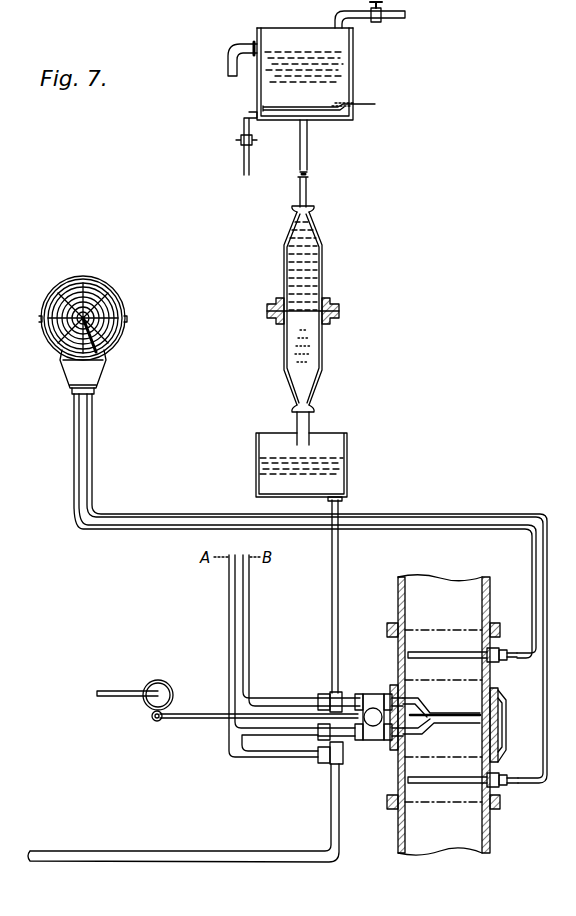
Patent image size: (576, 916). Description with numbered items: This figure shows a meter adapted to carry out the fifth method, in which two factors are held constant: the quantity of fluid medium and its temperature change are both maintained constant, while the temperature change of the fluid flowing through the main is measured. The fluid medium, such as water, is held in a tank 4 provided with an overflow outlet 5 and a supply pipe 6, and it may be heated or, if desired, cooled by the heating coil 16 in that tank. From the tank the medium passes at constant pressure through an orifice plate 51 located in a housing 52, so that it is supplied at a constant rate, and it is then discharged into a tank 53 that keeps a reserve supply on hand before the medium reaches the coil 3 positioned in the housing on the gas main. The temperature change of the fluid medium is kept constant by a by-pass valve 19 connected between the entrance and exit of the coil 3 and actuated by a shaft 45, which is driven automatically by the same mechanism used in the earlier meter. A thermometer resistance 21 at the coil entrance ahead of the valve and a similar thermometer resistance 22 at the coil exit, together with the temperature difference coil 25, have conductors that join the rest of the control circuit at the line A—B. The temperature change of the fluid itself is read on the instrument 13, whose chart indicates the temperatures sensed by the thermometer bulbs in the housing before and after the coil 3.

The coil 3 is at (470, 714).
The tank 4 is at (355, 74).
The overflow outlet 5 is at (226, 73).
The supply pipe 6 is at (398, 17).
The recording or indicating instrument 13 is at (111, 302).
The heating coil 16 is at (341, 110).
The by-pass valve 19 is at (373, 693).
The thermometer resistance 21 is at (341, 700).
The thermometer resistance 22 is at (350, 745).
The temperature difference coil 25 is at (329, 782).
The shaft 45 is at (122, 684).
The orifice plate 51 is at (310, 330).
The housing 52 is at (320, 250).
The tank 53 is at (350, 452).